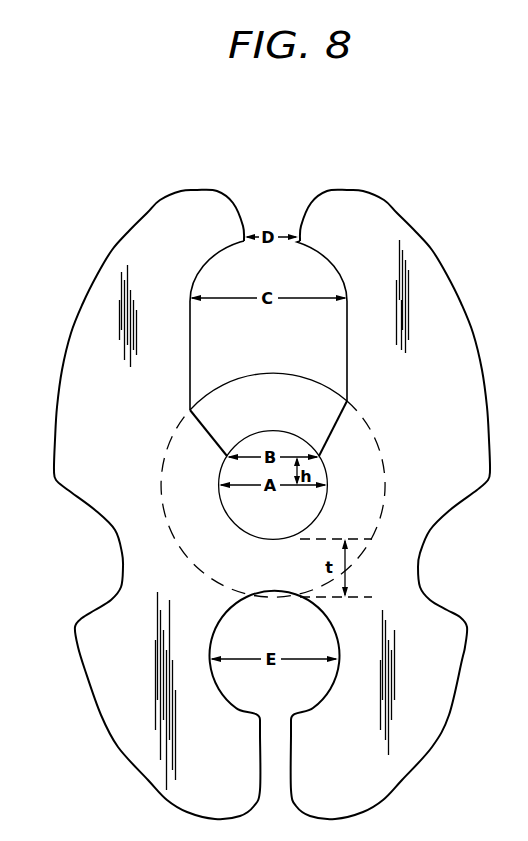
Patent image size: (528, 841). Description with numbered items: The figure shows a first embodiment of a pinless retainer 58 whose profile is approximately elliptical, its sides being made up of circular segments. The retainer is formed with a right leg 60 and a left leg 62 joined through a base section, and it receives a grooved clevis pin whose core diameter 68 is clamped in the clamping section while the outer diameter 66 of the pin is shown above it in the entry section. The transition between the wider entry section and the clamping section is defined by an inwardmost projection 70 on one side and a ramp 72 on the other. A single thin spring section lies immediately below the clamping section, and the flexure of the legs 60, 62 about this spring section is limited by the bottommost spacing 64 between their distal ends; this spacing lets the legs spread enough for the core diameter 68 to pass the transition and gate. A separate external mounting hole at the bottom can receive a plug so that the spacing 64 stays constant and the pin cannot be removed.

The retainer 58 is at (437, 732).
The right leg 60 is at (450, 458).
The left leg 62 is at (131, 424).
The bottommost spacing between the legs 64 is at (222, 768).
The outer diameter of the pin 66 is at (297, 375).
The core diameter of the clevis pin 68 is at (273, 430).
The inwardmost projection 70 is at (215, 440).
The ramp 72 is at (341, 410).